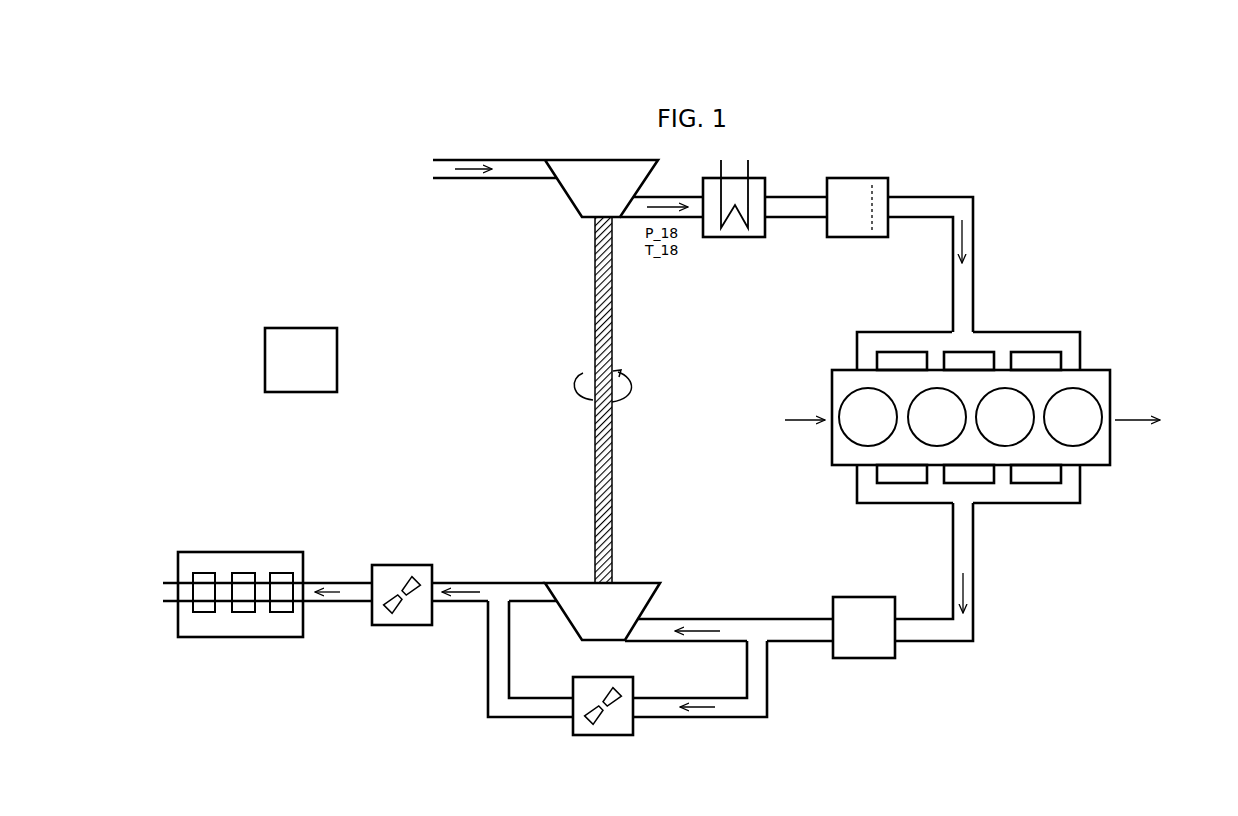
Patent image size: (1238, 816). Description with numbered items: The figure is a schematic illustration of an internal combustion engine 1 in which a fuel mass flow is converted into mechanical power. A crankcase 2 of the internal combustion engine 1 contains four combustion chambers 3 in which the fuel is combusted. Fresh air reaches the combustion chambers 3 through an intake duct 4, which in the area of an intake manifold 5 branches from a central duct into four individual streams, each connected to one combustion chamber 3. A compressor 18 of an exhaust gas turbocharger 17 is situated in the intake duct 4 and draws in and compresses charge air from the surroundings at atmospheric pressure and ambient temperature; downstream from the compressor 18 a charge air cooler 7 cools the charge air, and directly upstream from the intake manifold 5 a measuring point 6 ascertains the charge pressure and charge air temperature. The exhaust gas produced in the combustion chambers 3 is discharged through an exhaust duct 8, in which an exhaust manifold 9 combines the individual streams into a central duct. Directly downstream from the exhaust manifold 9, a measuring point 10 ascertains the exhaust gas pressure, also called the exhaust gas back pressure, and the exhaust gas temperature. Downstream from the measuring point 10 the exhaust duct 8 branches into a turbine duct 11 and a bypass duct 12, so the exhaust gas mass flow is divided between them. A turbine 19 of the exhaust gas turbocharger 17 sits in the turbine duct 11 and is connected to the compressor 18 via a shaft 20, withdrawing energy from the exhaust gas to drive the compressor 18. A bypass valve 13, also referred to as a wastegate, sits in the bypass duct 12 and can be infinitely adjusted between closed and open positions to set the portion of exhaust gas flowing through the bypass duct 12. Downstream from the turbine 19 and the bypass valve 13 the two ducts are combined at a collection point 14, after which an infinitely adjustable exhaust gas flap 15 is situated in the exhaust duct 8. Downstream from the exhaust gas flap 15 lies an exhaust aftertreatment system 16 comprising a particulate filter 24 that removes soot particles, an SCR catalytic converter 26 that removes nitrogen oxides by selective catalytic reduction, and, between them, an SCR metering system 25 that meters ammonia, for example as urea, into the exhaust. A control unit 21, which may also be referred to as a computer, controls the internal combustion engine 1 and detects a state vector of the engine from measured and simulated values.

The internal combustion engine 1 is at (1102, 268).
The crankcase 2 is at (981, 378).
The combustion chambers 3 is at (867, 407).
The intake duct 4 is at (937, 203).
The intake manifold 5 is at (932, 347).
The measuring point 6 is at (837, 178).
The charge air cooler 7 is at (723, 237).
The exhaust duct 8 is at (917, 637).
The exhaust manifold 9 is at (922, 498).
The measuring point 10 is at (835, 658).
The turbine duct 11 is at (723, 630).
The bypass duct 12 is at (722, 712).
The bypass valve 13 is at (618, 723).
The collection point 14 is at (503, 583).
The exhaust gas flap 15 is at (405, 577).
The exhaust aftertreatment system 16 is at (248, 589).
The exhaust gas turbocharger 17 is at (533, 378).
The compressor 18 is at (568, 200).
The turbine 19 is at (628, 583).
The shaft 20 is at (612, 505).
The control unit 21 is at (287, 350).
The particulate filter 24 is at (283, 605).
The SCR metering system 25 is at (242, 605).
The SCR catalytic converter 26 is at (207, 608).